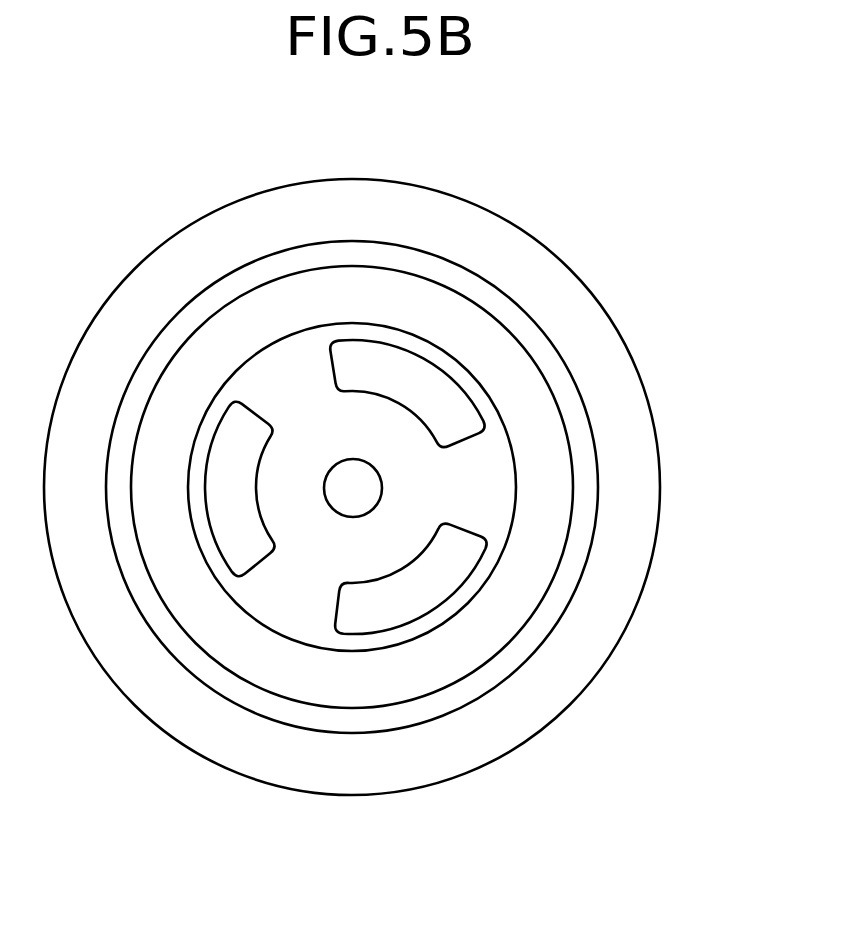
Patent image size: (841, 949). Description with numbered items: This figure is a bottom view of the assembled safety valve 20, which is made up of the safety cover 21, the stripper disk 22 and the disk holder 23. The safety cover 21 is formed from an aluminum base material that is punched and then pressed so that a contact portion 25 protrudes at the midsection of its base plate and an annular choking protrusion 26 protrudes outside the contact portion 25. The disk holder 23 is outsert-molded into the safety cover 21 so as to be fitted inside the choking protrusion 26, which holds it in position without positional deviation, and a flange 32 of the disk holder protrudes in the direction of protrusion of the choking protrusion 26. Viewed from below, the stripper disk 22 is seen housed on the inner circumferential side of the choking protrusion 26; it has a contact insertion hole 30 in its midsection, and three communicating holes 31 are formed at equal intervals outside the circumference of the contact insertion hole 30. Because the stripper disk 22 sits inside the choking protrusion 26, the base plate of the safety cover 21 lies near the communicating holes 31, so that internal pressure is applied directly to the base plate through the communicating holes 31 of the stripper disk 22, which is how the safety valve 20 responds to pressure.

The safety valve 20 is at (503, 198).
The safety cover 21 is at (570, 265).
The stripper disk 22 is at (287, 370).
The disk holder 23 is at (538, 362).
The contact portion 25 is at (376, 492).
The choking protrusion 26 is at (158, 353).
The contact insertion hole 30 is at (366, 460).
The communicating holes 31 is at (270, 433).
The flange 32 is at (505, 444).